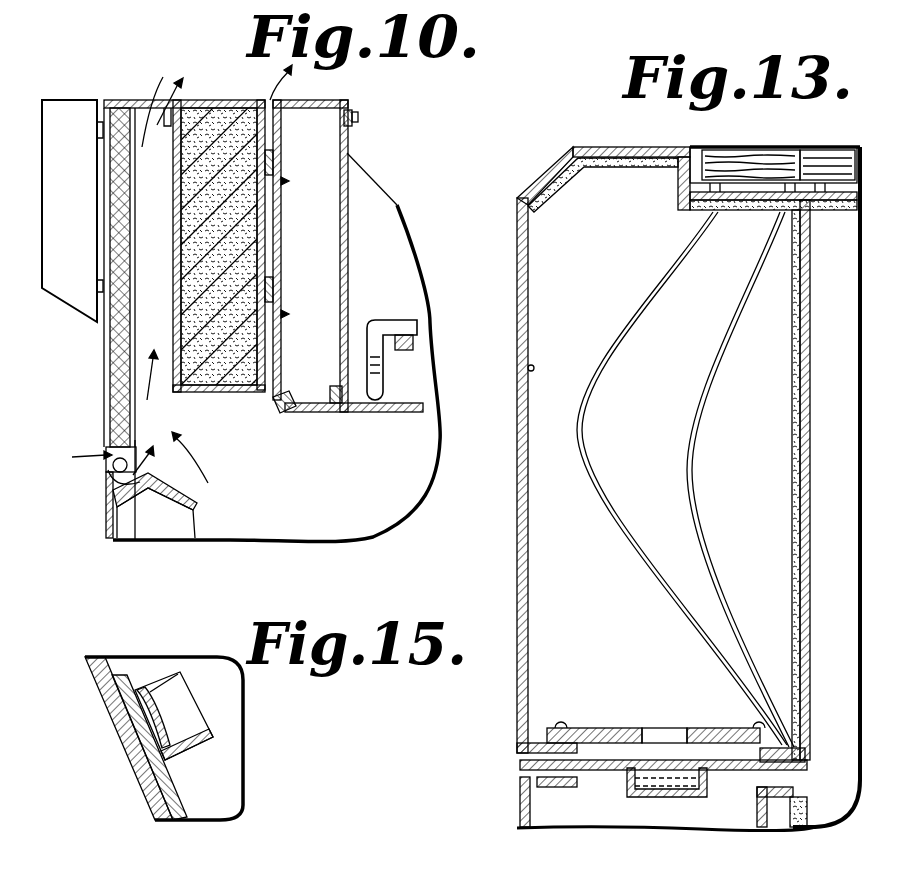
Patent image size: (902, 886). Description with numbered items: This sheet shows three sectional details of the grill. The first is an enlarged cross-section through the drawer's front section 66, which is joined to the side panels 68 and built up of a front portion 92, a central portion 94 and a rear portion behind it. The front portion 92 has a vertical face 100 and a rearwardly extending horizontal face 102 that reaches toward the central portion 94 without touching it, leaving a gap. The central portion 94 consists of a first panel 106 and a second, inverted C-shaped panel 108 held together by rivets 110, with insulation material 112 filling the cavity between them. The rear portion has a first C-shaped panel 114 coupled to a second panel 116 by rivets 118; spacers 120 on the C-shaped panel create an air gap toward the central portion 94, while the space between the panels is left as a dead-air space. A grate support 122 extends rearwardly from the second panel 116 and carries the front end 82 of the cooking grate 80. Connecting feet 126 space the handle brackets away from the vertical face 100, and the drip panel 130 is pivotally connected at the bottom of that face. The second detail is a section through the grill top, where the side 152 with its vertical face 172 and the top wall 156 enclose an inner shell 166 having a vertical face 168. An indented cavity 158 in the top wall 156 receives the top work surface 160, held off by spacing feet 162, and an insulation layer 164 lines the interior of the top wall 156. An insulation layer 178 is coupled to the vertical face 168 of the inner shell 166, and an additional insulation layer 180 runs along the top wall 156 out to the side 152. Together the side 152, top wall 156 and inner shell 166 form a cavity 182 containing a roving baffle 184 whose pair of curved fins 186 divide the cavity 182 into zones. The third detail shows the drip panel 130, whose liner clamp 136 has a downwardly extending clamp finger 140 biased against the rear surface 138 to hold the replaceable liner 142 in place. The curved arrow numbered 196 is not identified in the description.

In FIG. 10, the front section 66 is at (135, 95).
In FIG. 10, the side panels 68 is at (387, 200).
In FIG. 10, the cooking grate 80 is at (417, 325).
In FIG. 10, the front end 82 is at (382, 320).
In FIG. 10, the front portion 92 is at (116, 100).
In FIG. 10, the central portion 94 is at (210, 101).
In FIG. 10, the vertical face 100 is at (107, 402).
In FIG. 10, the horizontal face 102 is at (157, 141).
In FIG. 10, the first panel 106 is at (170, 333).
In FIG. 10, the second, inverted C-shaped panel 108 is at (244, 393).
In FIG. 10, the rivets 110 is at (170, 267).
In FIG. 10, the insulation material 112 is at (243, 100).
In FIG. 10, the first C-shaped panel 114 is at (318, 410).
In FIG. 10, the second panel 116 is at (347, 151).
In FIG. 10, the rivets 118 is at (352, 120).
In FIG. 10, the spacers 120 is at (282, 152).
In FIG. 10, the grate support 122 is at (410, 415).
In FIG. 10, the connecting feet 126 is at (103, 133).
In FIG. 10, the drip panel 130 is at (113, 523).
In FIG. 15, the drip panel 130 is at (120, 743).
In FIG. 10, the opening 196 is at (292, 83).
In FIG. 13, the sides 152 is at (518, 495).
In FIG. 13, the top wall 156 is at (613, 146).
In FIG. 13, the indented cavity 158 is at (705, 146).
In FIG. 13, the top work surface 160 is at (775, 147).
In FIG. 13, the spacing feet 162 is at (720, 182).
In FIG. 13, the insulation layer 164 is at (825, 212).
In FIG. 13, the inner shell 166 is at (809, 463).
In FIG. 13, the vertical face 168 is at (809, 577).
In FIG. 13, the vertical face 172 is at (518, 580).
In FIG. 13, the insulation layer 178 is at (794, 467).
In FIG. 13, the insulation layer 180 is at (560, 187).
In FIG. 13, the cavity 182 is at (528, 367).
In FIG. 13, the roving baffle 184 is at (625, 325).
In FIG. 13, the curved fins 186 is at (592, 573).
In FIG. 15, the liner clamp 136 is at (187, 697).
In FIG. 15, the rear surface 138 is at (110, 662).
In FIG. 15, the clamp finger 140 is at (168, 677).
In FIG. 15, the liner 142 is at (178, 790).